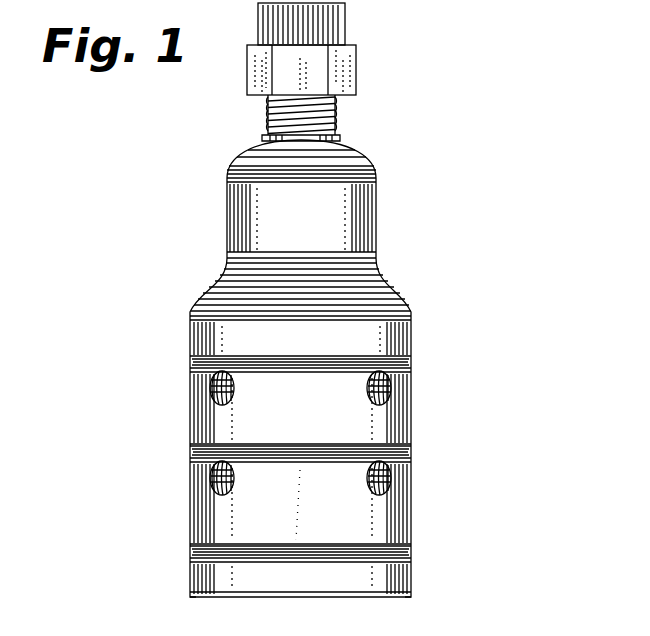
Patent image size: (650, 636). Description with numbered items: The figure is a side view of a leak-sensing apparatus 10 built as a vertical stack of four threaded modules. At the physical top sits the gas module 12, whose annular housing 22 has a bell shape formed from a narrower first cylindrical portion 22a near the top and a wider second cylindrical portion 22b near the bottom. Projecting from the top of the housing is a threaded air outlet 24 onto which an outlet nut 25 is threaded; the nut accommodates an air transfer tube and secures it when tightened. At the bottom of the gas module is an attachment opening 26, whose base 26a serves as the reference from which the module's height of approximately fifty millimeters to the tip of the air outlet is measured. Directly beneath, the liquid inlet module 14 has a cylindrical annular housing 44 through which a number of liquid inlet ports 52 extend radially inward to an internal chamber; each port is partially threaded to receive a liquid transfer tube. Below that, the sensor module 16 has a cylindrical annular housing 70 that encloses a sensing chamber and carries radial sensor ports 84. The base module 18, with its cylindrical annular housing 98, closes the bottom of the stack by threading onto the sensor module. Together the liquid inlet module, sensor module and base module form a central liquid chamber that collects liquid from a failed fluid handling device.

The leak-sensing apparatus 10 is at (396, 146).
The gas module 12 is at (380, 220).
The liquid inlet module 14 is at (414, 400).
The sensor module 16 is at (414, 488).
The base module 18 is at (414, 573).
The annular housing 22 is at (228, 196).
The first cylindrical portion 22a is at (332, 227).
The second cylindrical portion 22b is at (337, 352).
The air outlet 24 is at (268, 118).
The outlet nut 25 is at (346, 76).
The attachment opening 26 is at (414, 353).
The base of the attachment opening 26a is at (192, 360).
The annular housing 44 is at (216, 425).
The liquid inlet ports 52 is at (212, 388).
The annular housing 70 is at (214, 510).
The sensor ports 84 is at (212, 477).
The annular housing 98 is at (208, 568).